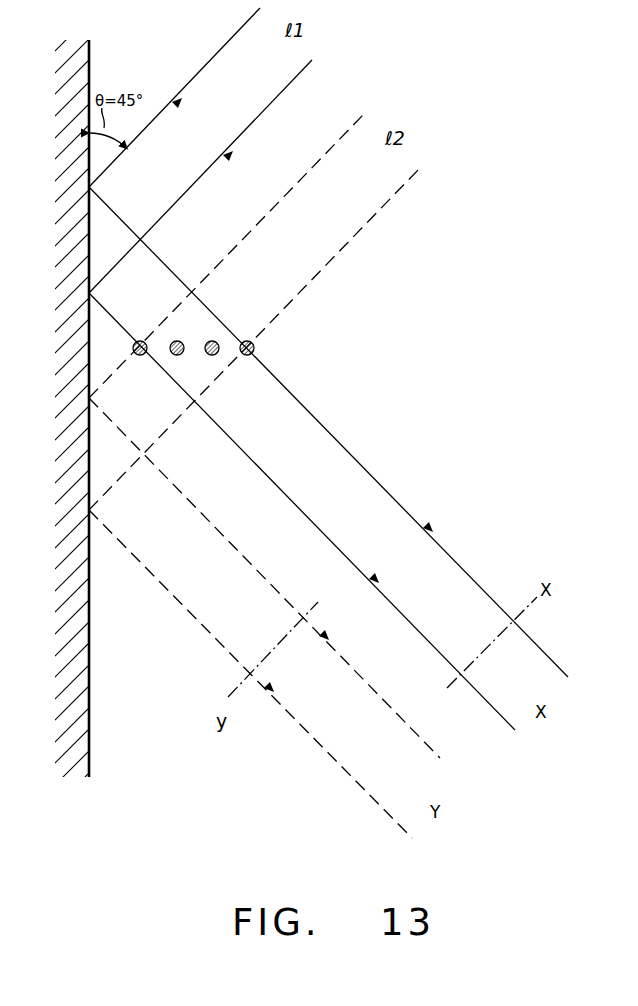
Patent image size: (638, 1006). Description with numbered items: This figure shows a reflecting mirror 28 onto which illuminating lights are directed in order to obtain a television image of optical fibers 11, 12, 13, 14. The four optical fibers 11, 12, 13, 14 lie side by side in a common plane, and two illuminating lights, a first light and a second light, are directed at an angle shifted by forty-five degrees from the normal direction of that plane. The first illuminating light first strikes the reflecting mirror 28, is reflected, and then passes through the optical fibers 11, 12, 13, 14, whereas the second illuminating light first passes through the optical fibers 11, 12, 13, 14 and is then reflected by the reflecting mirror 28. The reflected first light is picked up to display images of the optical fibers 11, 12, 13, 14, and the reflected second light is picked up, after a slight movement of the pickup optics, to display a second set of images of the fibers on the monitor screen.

The optical fiber 11 is at (141, 341).
The optical fiber 12 is at (177, 341).
The optical fiber 13 is at (212, 341).
The optical fiber 14 is at (247, 341).
The reflecting mirror 28 is at (90, 718).